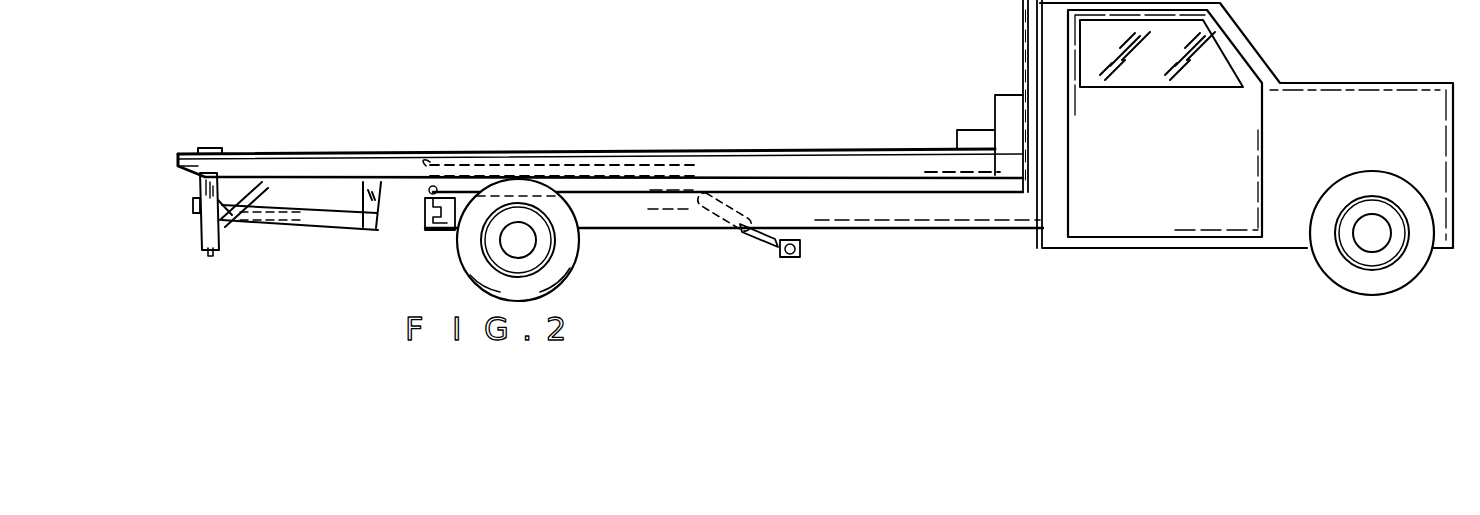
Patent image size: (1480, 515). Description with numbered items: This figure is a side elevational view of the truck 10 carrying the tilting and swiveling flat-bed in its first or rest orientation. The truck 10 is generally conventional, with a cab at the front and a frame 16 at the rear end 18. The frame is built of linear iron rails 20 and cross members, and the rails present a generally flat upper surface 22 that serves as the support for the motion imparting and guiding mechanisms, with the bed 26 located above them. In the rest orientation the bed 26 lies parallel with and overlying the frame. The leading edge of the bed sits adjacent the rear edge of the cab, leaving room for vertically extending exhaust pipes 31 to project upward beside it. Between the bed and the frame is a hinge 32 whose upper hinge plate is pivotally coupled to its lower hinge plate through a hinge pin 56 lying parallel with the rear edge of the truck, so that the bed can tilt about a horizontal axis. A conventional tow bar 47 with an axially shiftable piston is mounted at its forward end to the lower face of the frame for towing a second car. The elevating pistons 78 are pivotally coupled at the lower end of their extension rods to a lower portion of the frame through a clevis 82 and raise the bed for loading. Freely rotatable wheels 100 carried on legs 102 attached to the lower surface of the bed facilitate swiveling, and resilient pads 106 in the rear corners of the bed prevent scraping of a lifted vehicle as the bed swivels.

The truck 10 is at (1311, 73).
The frame 16 is at (343, 170).
The rear end 18 is at (177, 160).
The iron rails 20 is at (886, 215).
The upper surface 22 is at (962, 185).
The bed 26 is at (607, 152).
The exhaust pipes 31 is at (1012, 2).
The hinge 32 is at (418, 202).
The tow bar 47 is at (282, 224).
The hinge pin 56 is at (443, 232).
The elevating pistons 78 is at (752, 233).
The clevis 82 is at (800, 250).
The wheels 100 is at (208, 256).
The legs 102 is at (192, 207).
The resilient pads 106 is at (210, 146).